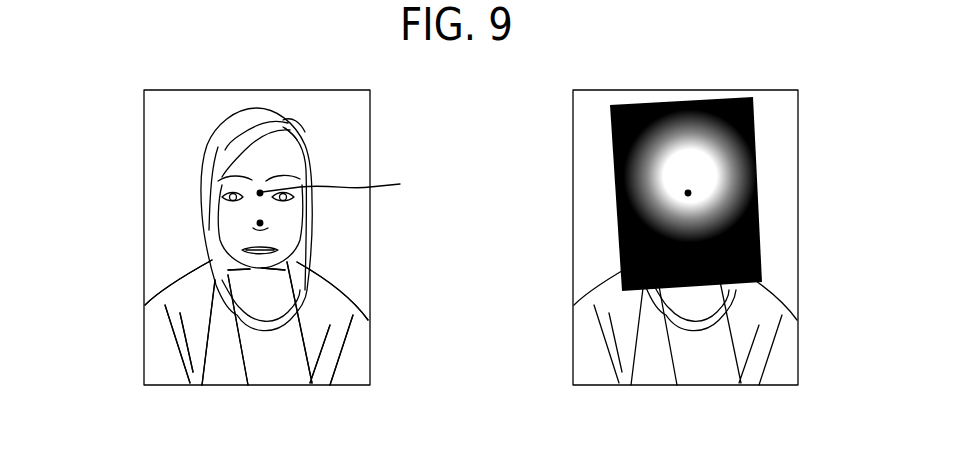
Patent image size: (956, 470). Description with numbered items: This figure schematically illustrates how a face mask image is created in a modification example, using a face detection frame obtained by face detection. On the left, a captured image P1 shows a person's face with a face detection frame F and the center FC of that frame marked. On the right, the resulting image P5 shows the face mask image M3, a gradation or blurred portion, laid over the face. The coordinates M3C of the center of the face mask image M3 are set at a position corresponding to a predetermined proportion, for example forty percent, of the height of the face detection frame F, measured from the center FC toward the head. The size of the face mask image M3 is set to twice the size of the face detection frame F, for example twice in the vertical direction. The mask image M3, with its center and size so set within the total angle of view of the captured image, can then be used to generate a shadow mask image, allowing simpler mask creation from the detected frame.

The captured image P1 is at (237, 212).
The processed image with mask P5 is at (624, 212).
The face detection frame F is at (207, 206).
The center of the face detection frame FC is at (258, 224).
The face mask image M3 is at (620, 238).
The coordinates of the center of the face mask image M3C is at (686, 193).